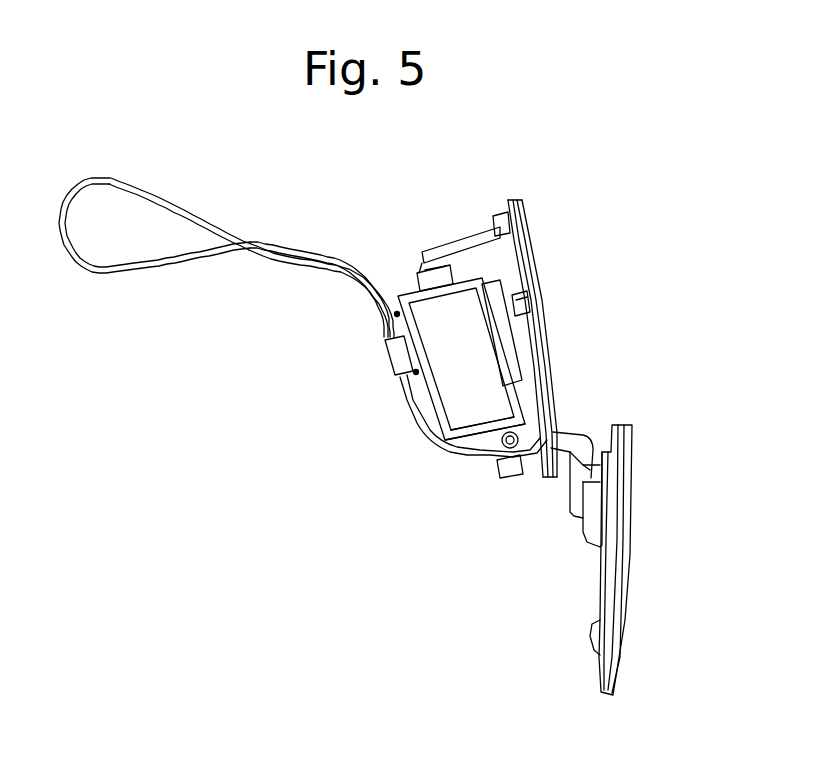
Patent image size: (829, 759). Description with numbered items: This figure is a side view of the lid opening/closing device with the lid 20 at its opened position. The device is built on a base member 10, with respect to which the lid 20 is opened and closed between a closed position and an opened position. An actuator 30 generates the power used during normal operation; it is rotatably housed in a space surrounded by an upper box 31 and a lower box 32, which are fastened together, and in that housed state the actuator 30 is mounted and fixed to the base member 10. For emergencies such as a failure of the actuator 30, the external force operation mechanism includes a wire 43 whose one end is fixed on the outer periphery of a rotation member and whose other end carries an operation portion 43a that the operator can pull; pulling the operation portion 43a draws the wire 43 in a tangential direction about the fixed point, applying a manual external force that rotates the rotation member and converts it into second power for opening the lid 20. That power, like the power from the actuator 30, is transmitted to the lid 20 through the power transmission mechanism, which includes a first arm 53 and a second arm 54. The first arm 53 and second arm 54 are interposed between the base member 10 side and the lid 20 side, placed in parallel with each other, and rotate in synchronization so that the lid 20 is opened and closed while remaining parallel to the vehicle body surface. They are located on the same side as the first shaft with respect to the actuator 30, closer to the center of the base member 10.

The base member 10 is at (480, 260).
The lid 20 is at (632, 532).
The actuator 30 is at (458, 443).
The upper box 31 is at (457, 392).
The lower box 32 is at (423, 400).
The wire 43 is at (340, 263).
The operation portion 43a is at (82, 262).
The first arm 53 is at (570, 440).
The second arm 54 is at (573, 500).